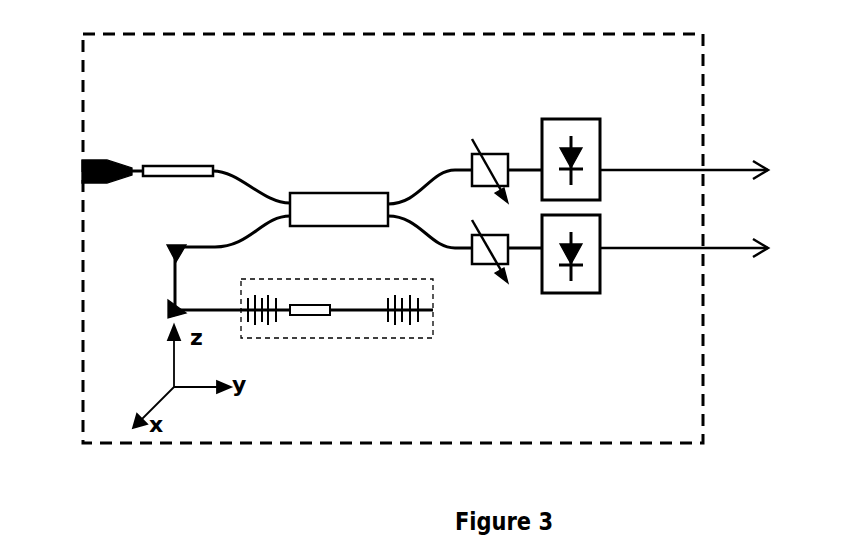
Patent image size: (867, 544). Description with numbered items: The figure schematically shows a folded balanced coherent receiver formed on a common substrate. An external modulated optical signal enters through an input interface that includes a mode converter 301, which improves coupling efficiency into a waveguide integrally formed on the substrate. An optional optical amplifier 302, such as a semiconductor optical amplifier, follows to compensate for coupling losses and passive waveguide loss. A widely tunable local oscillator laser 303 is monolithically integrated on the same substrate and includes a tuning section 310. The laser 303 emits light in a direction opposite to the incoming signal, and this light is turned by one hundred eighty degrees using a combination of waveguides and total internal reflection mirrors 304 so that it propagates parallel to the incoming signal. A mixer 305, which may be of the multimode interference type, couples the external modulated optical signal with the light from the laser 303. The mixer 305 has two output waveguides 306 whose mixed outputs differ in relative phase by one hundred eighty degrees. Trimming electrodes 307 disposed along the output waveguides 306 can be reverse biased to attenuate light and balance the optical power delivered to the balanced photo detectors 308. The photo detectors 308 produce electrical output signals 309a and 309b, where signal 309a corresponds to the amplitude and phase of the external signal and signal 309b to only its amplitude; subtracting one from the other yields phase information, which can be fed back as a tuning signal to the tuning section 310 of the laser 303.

The mode converter 301 is at (90, 158).
The optical amplifier 302 is at (210, 165).
The local oscillator laser 303 is at (433, 338).
The total internal reflection mirrors 304 is at (172, 250).
The mixer 305 is at (345, 190).
The output waveguides 306 is at (436, 237).
The trimming electrodes 307 is at (497, 148).
The photo detectors 308 is at (600, 140).
The electrical output signal 309a is at (744, 162).
The electrical output signal 309b is at (771, 262).
The tuning section 310 is at (313, 318).